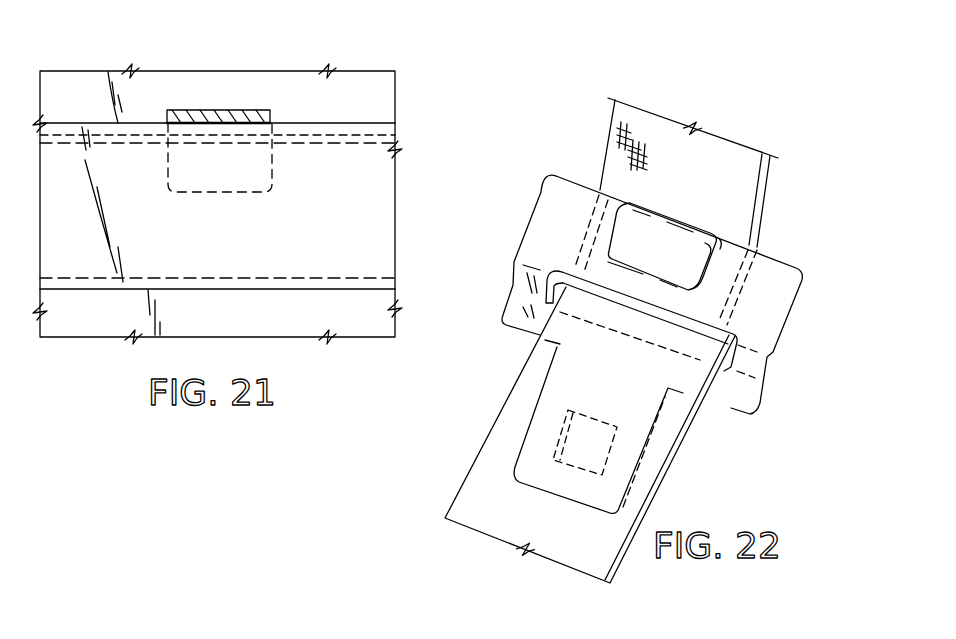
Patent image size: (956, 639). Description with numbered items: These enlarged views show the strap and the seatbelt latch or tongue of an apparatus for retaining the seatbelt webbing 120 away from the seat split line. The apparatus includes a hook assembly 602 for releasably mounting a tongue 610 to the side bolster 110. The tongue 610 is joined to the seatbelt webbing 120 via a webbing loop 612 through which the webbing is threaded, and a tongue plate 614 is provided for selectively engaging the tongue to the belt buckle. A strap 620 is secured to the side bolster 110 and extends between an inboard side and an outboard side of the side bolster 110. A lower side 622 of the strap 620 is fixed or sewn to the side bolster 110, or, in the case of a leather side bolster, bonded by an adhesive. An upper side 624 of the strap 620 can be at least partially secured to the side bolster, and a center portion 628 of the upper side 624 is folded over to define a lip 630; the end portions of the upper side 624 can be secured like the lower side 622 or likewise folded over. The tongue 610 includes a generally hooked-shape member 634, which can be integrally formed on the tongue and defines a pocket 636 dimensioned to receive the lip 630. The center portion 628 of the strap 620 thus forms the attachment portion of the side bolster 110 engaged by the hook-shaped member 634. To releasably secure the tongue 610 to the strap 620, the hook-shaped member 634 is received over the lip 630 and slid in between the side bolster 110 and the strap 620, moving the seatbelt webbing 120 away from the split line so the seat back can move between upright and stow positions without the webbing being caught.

In FIG. 21, the side bolster 110 is at (360, 80).
In FIG. 22, the seatbelt webbing 120 is at (720, 147).
In FIG. 22, the hook assembly 602 is at (607, 219).
In FIG. 22, the tongue 610 is at (733, 411).
In FIG. 22, the webbing loop 612 is at (556, 272).
In FIG. 22, the tongue plate 614 is at (530, 448).
In FIG. 21, the strap 620 is at (373, 193).
In FIG. 21, the lower side 622 is at (88, 290).
In FIG. 21, the upper side 624 is at (106, 118).
In FIG. 21, the center portion 628 is at (272, 124).
In FIG. 21, the lip 630 is at (219, 127).
In FIG. 21, the hooked-shape member 634 is at (230, 182).
In FIG. 22, the hooked-shape member 634 is at (652, 257).
In FIG. 22, the pocket 636 is at (713, 253).